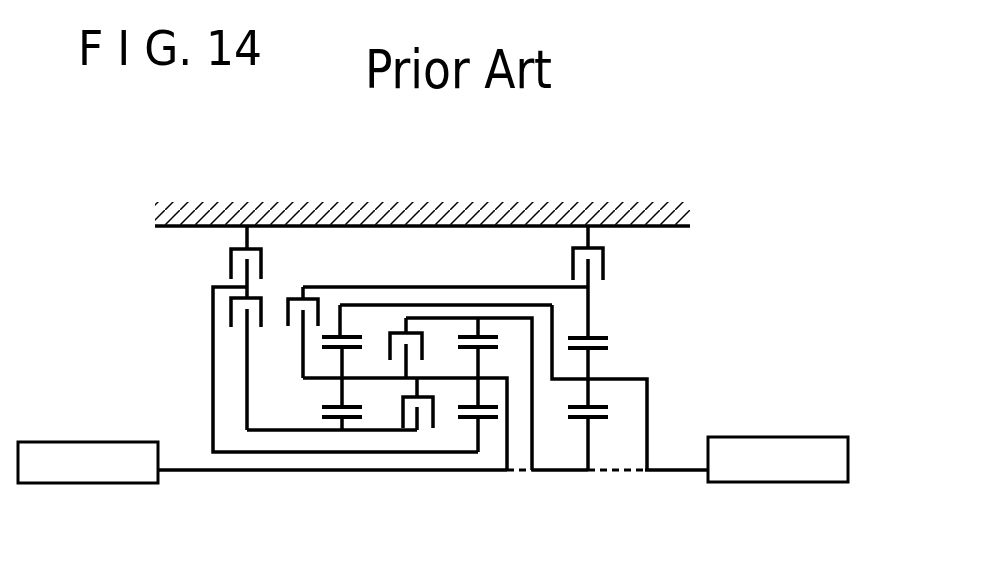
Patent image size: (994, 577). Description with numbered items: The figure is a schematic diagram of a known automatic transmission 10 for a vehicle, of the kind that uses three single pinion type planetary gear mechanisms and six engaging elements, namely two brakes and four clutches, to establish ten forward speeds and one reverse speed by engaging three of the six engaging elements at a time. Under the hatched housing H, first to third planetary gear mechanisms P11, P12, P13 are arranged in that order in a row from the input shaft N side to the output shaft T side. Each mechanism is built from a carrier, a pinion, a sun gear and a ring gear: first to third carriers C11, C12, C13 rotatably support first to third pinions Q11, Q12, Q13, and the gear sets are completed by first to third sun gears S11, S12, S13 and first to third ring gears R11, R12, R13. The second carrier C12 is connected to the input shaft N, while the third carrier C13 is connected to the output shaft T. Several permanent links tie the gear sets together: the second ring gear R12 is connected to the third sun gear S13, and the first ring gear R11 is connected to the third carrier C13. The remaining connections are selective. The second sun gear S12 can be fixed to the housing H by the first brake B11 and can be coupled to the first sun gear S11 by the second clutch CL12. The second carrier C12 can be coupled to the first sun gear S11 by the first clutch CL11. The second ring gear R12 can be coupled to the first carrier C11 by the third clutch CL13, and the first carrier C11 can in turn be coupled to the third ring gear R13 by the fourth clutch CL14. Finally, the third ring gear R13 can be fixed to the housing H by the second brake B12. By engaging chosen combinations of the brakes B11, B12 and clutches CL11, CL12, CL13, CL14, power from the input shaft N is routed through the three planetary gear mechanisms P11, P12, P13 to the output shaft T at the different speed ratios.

The automatic transmission 10 is at (529, 176).
The housing H is at (413, 215).
The first brake B11 is at (229, 257).
The second brake B12 is at (612, 266).
The first clutch CL11 is at (419, 430).
The second clutch CL12 is at (230, 311).
The third clutch CL13 is at (406, 330).
The fourth clutch CL14 is at (309, 283).
The first ring gear R11 is at (342, 324).
The second ring gear R12 is at (481, 334).
The third ring gear R13 is at (590, 325).
The first pinion Q11 is at (344, 359).
The second pinion Q12 is at (483, 359).
The third pinion Q13 is at (593, 359).
The first carrier C11 is at (318, 379).
The second carrier C12 is at (477, 376).
The third carrier C13 is at (599, 383).
The first sun gear S11 is at (340, 426).
The second sun gear S12 is at (480, 424).
The third sun gear S13 is at (590, 424).
The first planetary gear mechanism P11 is at (369, 400).
The second planetary gear mechanism P12 is at (491, 425).
The third planetary gear mechanism P13 is at (571, 427).
The input shaft N is at (115, 484).
The output shaft T is at (755, 483).